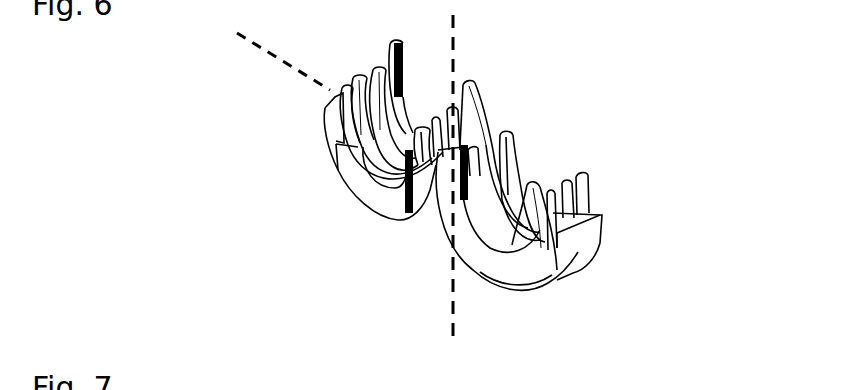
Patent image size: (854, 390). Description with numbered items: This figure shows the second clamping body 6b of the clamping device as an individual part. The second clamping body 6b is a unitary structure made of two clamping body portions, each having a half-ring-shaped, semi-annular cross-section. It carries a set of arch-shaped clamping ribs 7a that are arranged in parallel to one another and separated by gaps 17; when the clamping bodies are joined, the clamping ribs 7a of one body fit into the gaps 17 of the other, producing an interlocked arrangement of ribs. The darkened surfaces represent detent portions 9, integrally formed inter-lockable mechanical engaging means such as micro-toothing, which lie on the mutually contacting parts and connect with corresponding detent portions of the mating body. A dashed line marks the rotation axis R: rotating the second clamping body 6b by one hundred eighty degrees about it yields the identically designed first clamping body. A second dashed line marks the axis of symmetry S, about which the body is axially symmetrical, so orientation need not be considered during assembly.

The second clamping body 6b is at (290, 127).
The arch-shaped clamping ribs 7a is at (477, 170).
The gaps 17 is at (487, 205).
The detent portions 9 is at (413, 208).
The axis of symmetry S is at (453, 312).
The rotation axis R is at (584, 251).